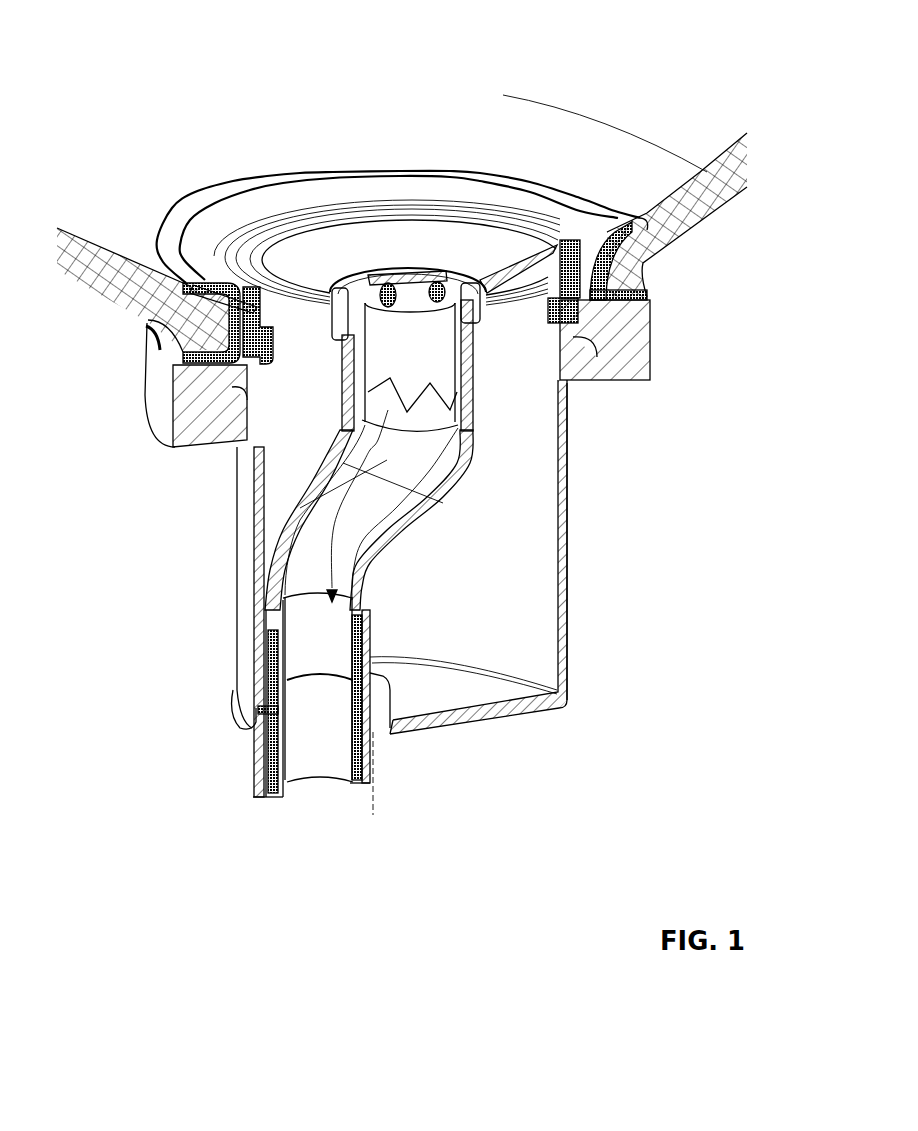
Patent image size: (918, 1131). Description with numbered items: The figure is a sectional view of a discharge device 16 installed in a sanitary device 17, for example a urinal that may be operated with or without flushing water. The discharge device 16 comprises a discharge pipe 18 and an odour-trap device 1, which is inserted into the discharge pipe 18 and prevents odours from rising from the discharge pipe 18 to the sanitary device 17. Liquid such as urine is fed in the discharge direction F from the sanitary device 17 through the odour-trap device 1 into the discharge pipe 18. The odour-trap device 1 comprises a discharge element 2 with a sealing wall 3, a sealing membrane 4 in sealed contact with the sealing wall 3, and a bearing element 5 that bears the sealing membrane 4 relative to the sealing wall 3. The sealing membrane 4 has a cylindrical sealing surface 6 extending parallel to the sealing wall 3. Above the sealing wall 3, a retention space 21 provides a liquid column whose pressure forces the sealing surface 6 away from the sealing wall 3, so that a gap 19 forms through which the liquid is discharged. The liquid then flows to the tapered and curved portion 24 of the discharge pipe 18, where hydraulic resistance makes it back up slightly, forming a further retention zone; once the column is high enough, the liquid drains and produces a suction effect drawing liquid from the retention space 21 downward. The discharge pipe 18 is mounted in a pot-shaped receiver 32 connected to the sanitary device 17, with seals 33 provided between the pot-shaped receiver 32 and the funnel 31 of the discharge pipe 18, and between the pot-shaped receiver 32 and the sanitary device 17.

The odour-trap device 1 is at (409, 280).
The discharge element 2 is at (550, 322).
The sealing wall 3 is at (367, 293).
The sealing membrane 4 is at (387, 410).
The bearing element 5 is at (392, 277).
The sealing surface 6 is at (422, 374).
The discharge device 16 is at (563, 542).
The sanitary device 17 is at (687, 217).
The discharge pipe 18 is at (467, 467).
The gap 19 is at (463, 362).
The retention space 21 is at (465, 297).
The tapered and/or curved portion 24 is at (407, 535).
The funnel 31 is at (290, 267).
The pot-shaped receiver 32 is at (563, 613).
The seals 33 is at (257, 350).
The discharge direction F is at (330, 551).